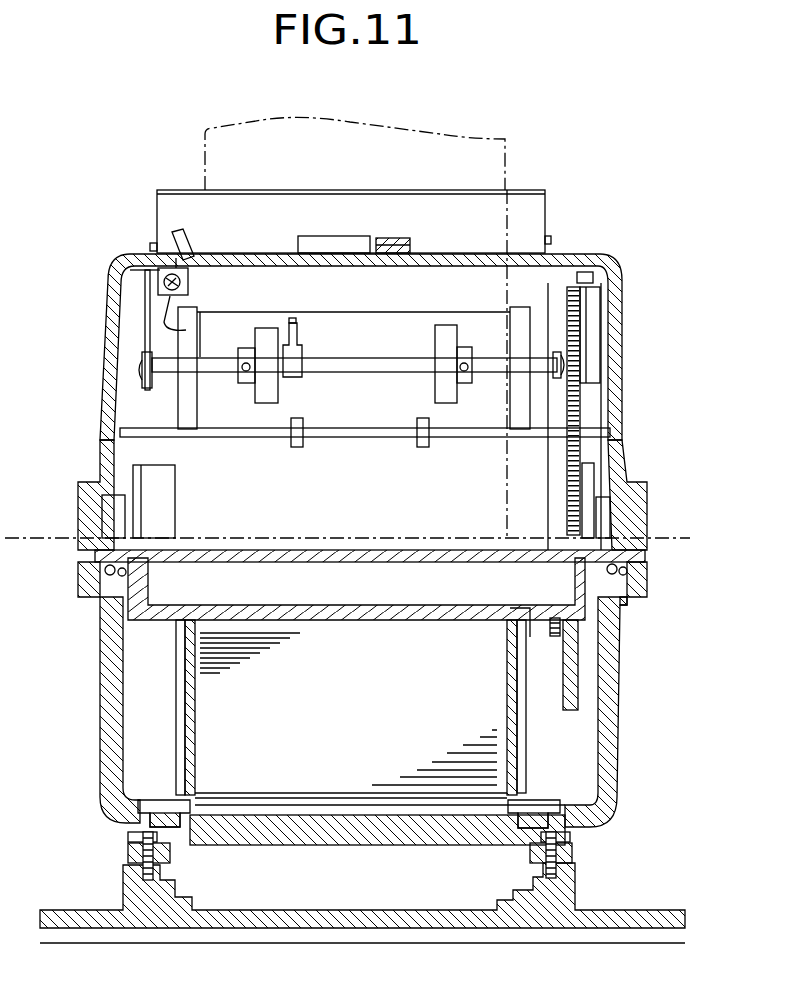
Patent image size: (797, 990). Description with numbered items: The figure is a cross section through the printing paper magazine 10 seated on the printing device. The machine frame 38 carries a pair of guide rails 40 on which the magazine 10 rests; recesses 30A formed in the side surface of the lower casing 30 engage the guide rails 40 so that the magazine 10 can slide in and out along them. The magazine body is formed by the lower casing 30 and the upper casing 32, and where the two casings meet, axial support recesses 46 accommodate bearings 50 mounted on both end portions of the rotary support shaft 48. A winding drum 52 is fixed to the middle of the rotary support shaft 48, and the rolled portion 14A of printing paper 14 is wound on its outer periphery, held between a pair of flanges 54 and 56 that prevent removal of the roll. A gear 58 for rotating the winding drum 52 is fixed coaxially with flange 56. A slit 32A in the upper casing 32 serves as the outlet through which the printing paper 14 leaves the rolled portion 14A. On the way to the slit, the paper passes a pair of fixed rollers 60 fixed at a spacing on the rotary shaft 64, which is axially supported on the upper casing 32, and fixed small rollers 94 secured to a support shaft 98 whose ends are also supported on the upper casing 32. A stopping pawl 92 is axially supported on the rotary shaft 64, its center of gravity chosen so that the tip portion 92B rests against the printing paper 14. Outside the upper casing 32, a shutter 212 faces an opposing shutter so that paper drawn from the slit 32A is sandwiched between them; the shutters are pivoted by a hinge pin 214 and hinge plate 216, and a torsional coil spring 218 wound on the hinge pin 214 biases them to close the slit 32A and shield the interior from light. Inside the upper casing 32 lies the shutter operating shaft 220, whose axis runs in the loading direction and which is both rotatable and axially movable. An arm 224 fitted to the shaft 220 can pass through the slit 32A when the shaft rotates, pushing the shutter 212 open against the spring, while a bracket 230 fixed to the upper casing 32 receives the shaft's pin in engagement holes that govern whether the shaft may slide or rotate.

The magazine 10 is at (672, 288).
The printing paper 14 is at (505, 168).
The rolled portion 14A is at (346, 785).
The lower casing 30 is at (620, 712).
The recesses 30A is at (173, 848).
The upper casing 32 is at (624, 378).
The slit 32A is at (525, 262).
The machine frame 38 is at (400, 920).
The guide rails 40 is at (150, 822).
The axial support recesses 46 is at (110, 508).
The rotary support shaft 48 is at (622, 620).
The bearings 50 is at (110, 527).
The winding drum 52 is at (508, 640).
The flange 54 is at (526, 708).
The flange 56 is at (178, 737).
The gear 58 is at (608, 448).
The fixed rollers 60 is at (278, 392).
The rotary shaft 64 is at (400, 358).
The stopping pawl 92 is at (302, 349).
The tip portion 92B is at (298, 322).
The fixed small rollers 94 is at (296, 447).
The support shaft 98 is at (363, 437).
The shutter 212 is at (547, 206).
The hinge pin 214 is at (150, 246).
The hinge plate 216 is at (348, 243).
The torsional coil spring 218 is at (406, 238).
The shaft 220 is at (198, 328).
The arm 224 is at (178, 235).
The bracket 230 is at (190, 292).